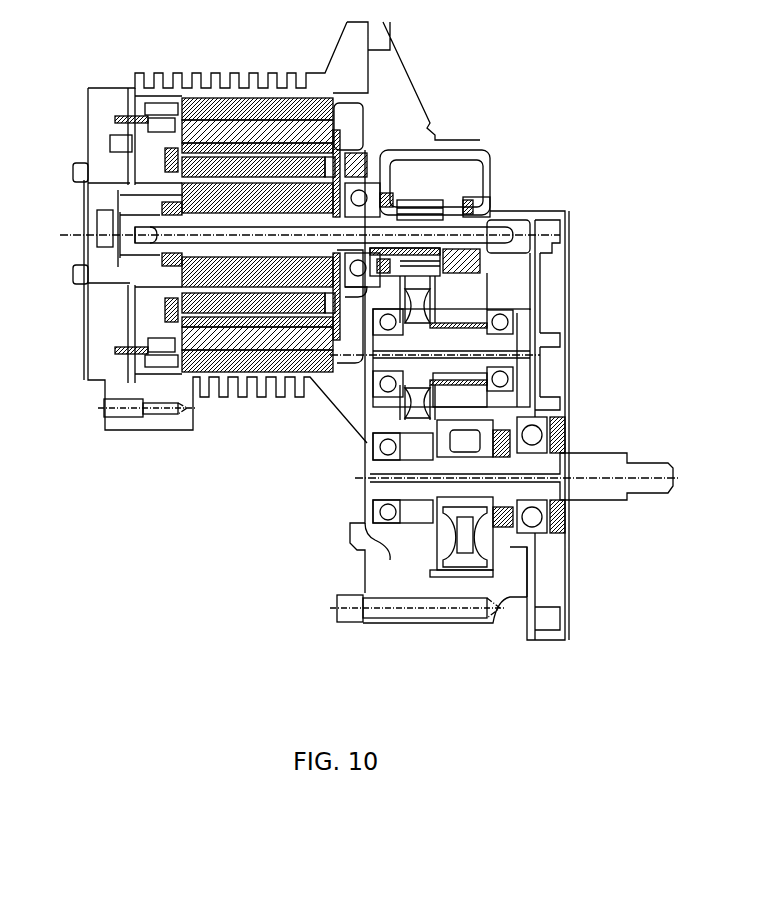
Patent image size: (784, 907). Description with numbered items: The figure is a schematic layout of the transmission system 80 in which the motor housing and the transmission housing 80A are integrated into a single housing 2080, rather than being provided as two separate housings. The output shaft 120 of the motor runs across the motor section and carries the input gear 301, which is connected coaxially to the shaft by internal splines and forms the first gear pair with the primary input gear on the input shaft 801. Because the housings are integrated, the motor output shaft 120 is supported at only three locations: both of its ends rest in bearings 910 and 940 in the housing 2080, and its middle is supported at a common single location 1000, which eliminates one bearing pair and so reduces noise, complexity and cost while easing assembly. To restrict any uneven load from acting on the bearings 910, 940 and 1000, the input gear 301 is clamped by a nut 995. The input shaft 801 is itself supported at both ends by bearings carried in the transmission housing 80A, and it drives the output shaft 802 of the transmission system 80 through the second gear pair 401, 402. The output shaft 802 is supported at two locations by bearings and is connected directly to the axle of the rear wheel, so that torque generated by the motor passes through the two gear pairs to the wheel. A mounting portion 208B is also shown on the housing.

The mounting bracket 208B is at (417, 82).
The middle bearing 1000 is at (366, 192).
The input gear 301 is at (415, 210).
The end bearing 940 is at (476, 208).
The transmission system 80 is at (513, 238).
The nut 995 is at (461, 260).
The input shaft 801 is at (468, 360).
The second gear pair gear 401 is at (468, 395).
The output shaft 802 is at (639, 462).
The transmission housing 80A is at (571, 561).
The second gear pair gear 402 is at (430, 547).
The single housing 2080 is at (333, 424).
The output shaft of motor 120 is at (143, 264).
The end bearing 910 is at (147, 203).